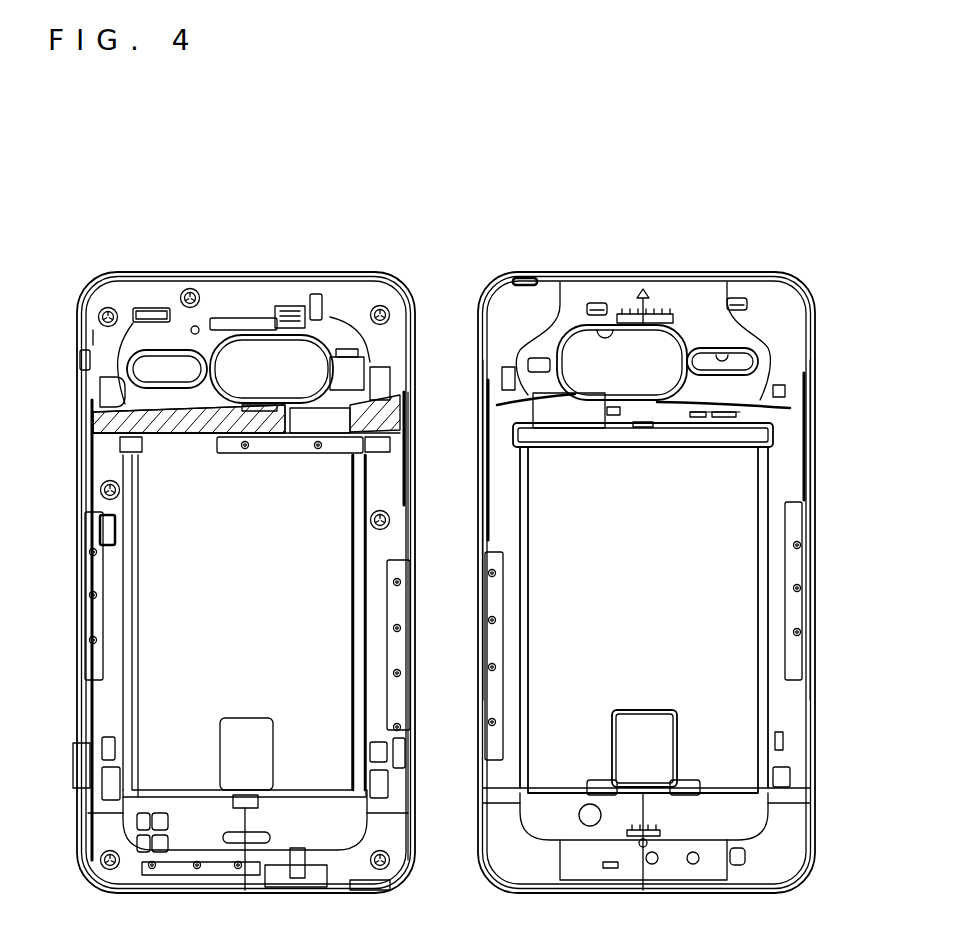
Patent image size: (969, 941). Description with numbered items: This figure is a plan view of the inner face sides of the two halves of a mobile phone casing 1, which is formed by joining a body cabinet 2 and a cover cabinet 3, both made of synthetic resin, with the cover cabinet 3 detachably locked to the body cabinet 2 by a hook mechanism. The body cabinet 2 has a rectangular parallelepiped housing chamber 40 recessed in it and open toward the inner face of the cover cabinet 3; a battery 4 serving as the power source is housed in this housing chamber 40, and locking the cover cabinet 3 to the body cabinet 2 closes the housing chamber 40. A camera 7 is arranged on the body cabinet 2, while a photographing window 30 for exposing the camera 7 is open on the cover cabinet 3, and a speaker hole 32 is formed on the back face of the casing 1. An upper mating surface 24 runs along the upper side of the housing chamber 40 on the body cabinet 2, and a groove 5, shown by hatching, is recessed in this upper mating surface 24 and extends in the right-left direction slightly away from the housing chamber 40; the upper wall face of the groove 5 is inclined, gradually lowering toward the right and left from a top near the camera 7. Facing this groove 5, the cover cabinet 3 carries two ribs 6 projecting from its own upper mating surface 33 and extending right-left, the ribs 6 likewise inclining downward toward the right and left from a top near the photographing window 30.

The casing 1 is at (495, 126).
The body cabinet 2 is at (322, 273).
The cover cabinet 3 is at (547, 273).
The battery 4 is at (318, 663).
The groove 5 is at (183, 410).
The rib 6 is at (528, 362).
The camera 7 is at (232, 357).
The upper mating surface 24 is at (137, 370).
The photographing window 30 is at (620, 322).
The speaker hole 32 is at (722, 348).
The upper mating surface 33 is at (718, 393).
The housing chamber 40 is at (352, 688).